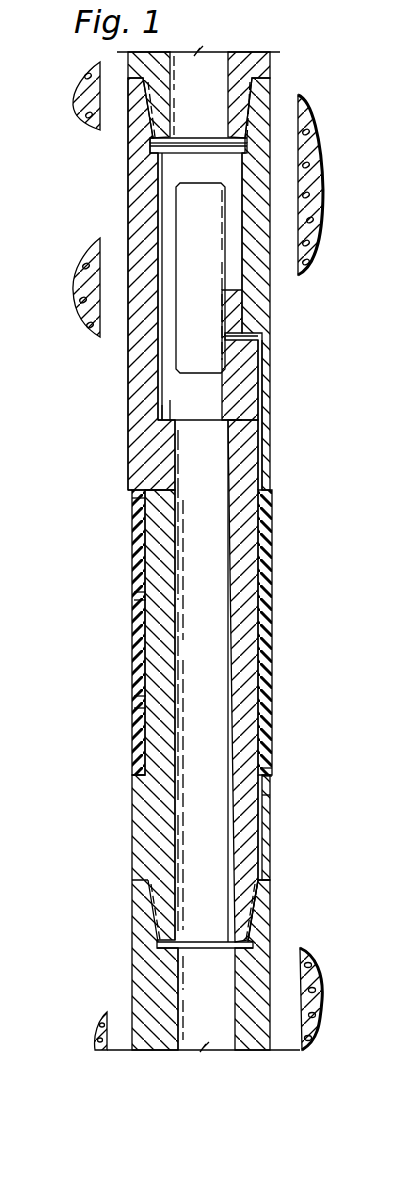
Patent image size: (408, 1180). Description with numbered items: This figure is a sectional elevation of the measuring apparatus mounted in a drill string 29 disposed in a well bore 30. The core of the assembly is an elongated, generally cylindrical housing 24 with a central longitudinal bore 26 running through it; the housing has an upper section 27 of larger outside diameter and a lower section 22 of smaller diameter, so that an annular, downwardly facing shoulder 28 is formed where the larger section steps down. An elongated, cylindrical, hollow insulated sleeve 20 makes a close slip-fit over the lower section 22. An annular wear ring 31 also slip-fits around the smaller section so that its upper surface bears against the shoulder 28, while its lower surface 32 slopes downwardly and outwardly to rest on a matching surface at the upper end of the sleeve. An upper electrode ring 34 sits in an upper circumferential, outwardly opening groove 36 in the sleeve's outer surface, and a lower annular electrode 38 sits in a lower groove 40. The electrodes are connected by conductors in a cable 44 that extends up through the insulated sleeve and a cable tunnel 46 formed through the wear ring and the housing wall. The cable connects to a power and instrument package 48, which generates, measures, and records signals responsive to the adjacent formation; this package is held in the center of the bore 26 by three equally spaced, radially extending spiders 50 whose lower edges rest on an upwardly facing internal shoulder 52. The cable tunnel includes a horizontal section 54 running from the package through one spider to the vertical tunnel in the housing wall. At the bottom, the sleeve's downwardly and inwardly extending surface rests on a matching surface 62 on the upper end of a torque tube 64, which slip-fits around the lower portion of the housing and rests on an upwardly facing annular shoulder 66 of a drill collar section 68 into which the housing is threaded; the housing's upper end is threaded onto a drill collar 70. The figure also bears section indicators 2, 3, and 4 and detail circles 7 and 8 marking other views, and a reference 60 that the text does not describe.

The section line 2- 2 is at (116, 168).
The section line 3- 3 is at (95, 704).
The section line 4- 4 is at (100, 828).
The detail circle 7 is at (107, 494).
The detail circle 8 is at (295, 494).
The sleeve 20 is at (274, 672).
The lower section 22 is at (272, 778).
The housing 24 is at (126, 197).
The central longitudinal bore 26 is at (236, 803).
The upper section 27 is at (128, 222).
The shoulder 28 is at (140, 470).
The drill string 29 is at (126, 890).
The well bore 30 is at (108, 1010).
The wear ring 31 is at (140, 495).
The lower surface 32 is at (130, 522).
The upper electrode ring 34 is at (135, 598).
The upper groove 36 is at (140, 592).
The lower annular electrode 38 is at (133, 712).
The lower groove 40 is at (140, 696).
The cable 44 is at (266, 440).
The cable tunnel 46 is at (262, 412).
The power and instrument package 48 is at (200, 278).
The spiders 50 is at (193, 422).
The internal shoulder 52 is at (160, 417).
The horizontal section 54 is at (264, 336).
The shoulder 60 is at (280, 768).
The matching surface 62 is at (133, 766).
The torque tube 64 is at (272, 795).
The annular shoulder 66 is at (266, 888).
The drill collar section 68 is at (272, 919).
The drill collar 70 is at (272, 63).